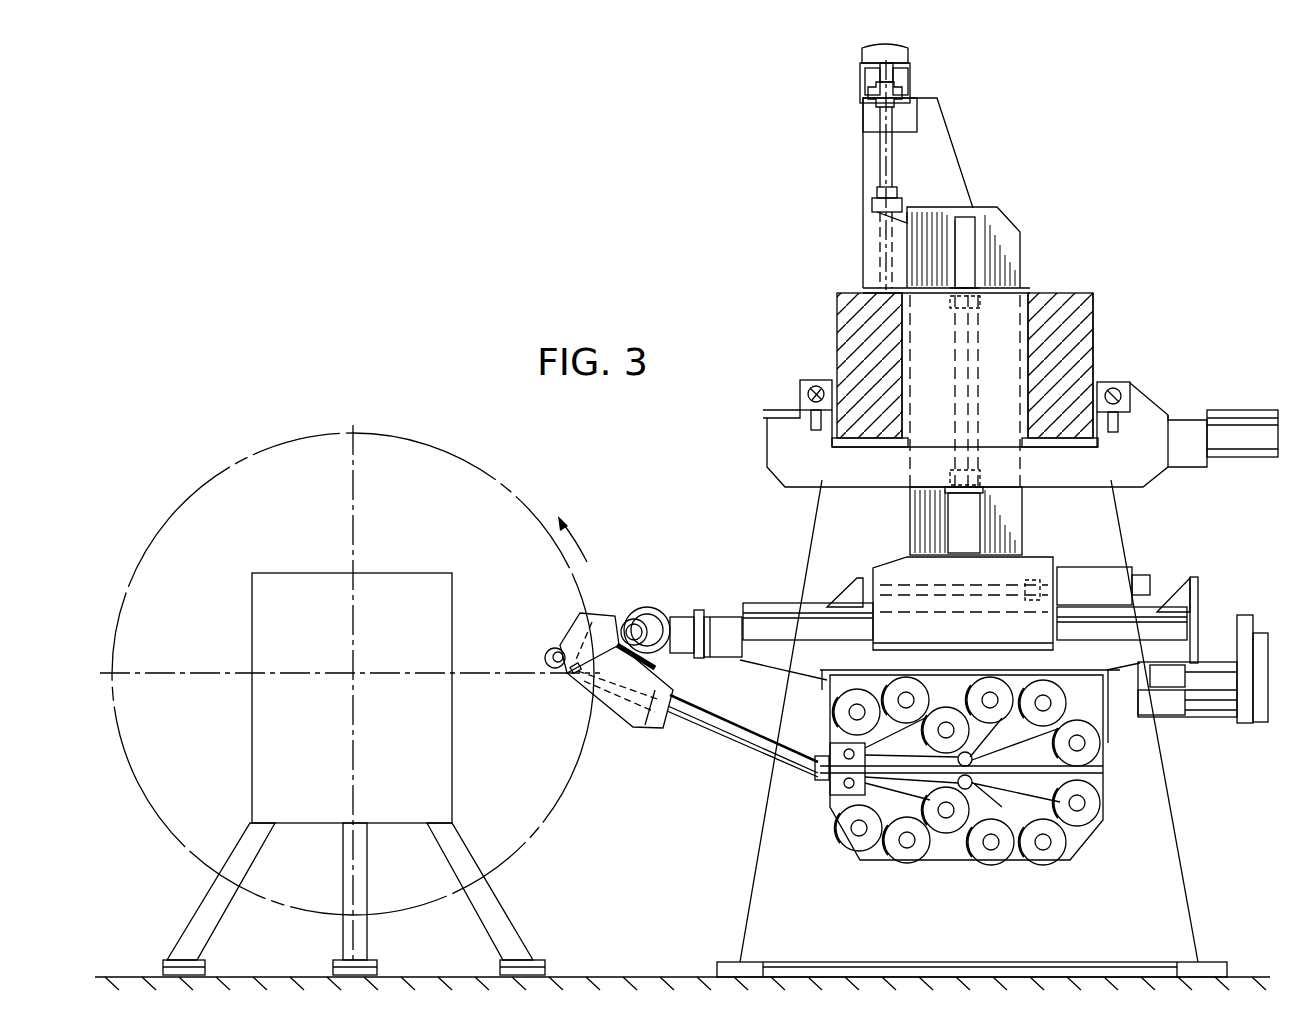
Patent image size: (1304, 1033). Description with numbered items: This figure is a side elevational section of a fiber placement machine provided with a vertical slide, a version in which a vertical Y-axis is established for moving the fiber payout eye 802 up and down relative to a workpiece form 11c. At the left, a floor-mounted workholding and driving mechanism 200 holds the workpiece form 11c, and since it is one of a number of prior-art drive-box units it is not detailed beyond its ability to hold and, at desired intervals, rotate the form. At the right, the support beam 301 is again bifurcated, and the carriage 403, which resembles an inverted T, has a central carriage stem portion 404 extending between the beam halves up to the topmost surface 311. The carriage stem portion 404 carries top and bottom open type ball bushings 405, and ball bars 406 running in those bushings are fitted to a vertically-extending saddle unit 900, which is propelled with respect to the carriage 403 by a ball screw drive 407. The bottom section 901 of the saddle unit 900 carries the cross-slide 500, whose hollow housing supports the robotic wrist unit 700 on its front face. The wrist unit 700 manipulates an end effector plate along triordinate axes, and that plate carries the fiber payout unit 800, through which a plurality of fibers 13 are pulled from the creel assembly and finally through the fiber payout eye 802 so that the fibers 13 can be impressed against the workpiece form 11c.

The workpiece form 11c is at (500, 482).
The fiber 13 is at (722, 738).
The workholding and driving mechanism 200 is at (458, 606).
The support beam 301 is at (1095, 333).
The topmost surface 311 is at (1067, 294).
The carriage 403 is at (1090, 484).
The central carriage stem portion 404 is at (900, 358).
The open type ball bushings 405 is at (980, 288).
The ball bars 406 is at (975, 222).
The ball screw drive 407 is at (860, 107).
The cross-slide 500 is at (855, 666).
The robotic wrist unit 700 is at (661, 590).
The fiber payout unit 800 is at (621, 737).
The fiber payout eye 802 is at (572, 672).
The saddle unit 900 is at (1030, 507).
The bottom section 901 is at (1035, 553).